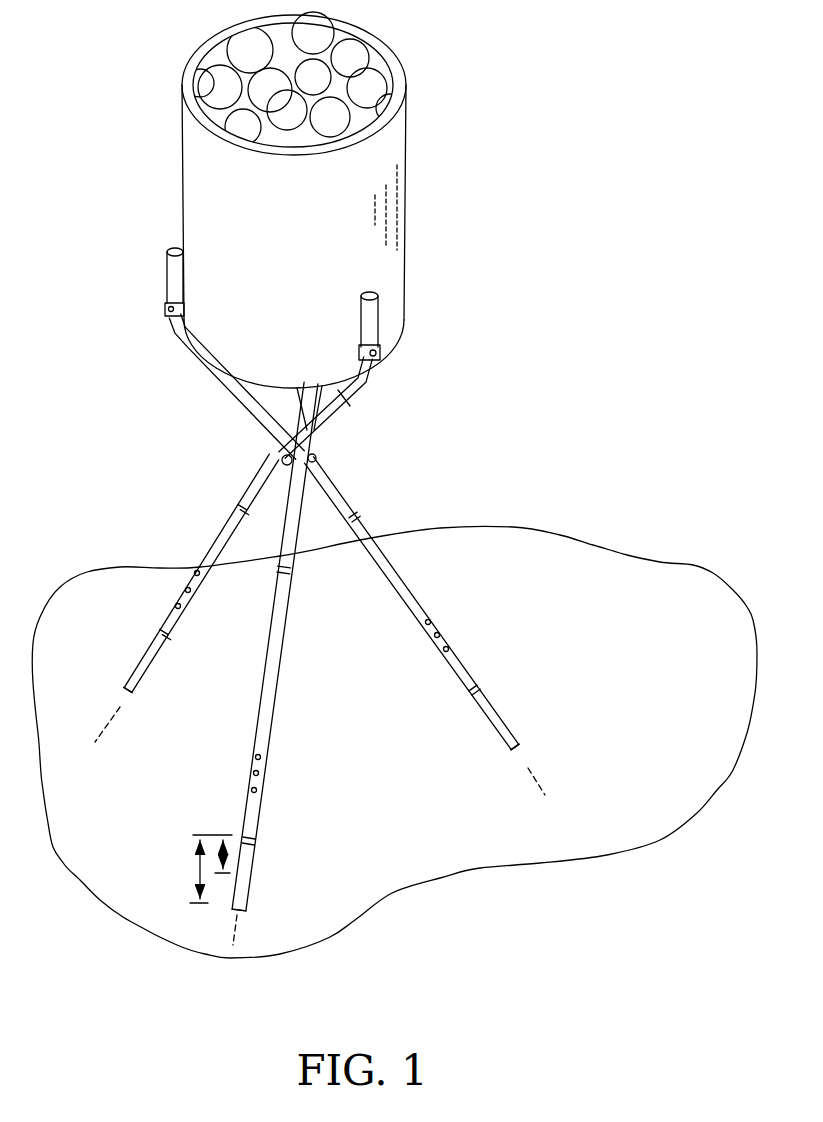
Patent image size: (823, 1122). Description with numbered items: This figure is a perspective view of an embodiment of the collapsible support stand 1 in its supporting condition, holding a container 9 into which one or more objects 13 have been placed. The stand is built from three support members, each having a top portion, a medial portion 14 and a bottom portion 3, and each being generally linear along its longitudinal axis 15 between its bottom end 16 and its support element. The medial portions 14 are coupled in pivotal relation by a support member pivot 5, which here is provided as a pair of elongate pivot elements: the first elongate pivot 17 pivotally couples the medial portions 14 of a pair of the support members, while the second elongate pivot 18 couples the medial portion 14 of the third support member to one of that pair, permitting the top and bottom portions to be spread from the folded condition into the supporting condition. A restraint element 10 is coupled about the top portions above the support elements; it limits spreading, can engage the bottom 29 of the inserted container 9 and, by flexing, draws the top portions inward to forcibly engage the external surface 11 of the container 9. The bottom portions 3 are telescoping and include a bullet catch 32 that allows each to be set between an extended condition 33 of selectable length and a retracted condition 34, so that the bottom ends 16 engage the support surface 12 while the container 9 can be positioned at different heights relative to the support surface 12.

The collapsible support stand 1 is at (590, 88).
The container 9 is at (331, 197).
The external surface 11 is at (393, 262).
The objects 13 is at (335, 32).
The restraint element 10 is at (166, 315).
The bottom 29 is at (340, 393).
The support member pivot 5 is at (322, 482).
The first elongate pivot element 17 is at (317, 459).
The second elongate pivot element 18 is at (285, 466).
The medial portions 14 is at (248, 480).
The bullet catch 32 is at (178, 607).
The bottom portions 3 is at (142, 670).
The bottom ends 16 is at (122, 692).
The longitudinal axis 15 is at (115, 707).
The extended condition 33 is at (195, 838).
The retracted condition 34 is at (218, 833).
The support surface 12 is at (697, 782).